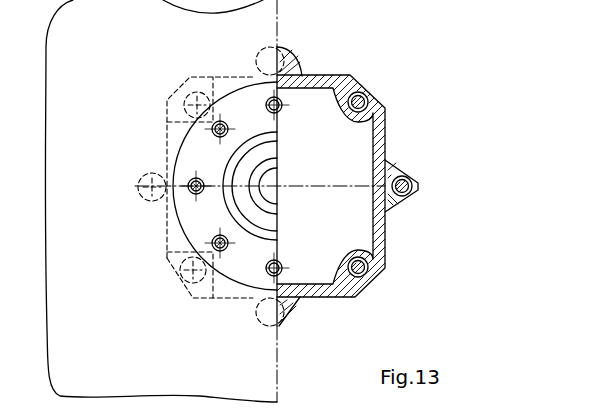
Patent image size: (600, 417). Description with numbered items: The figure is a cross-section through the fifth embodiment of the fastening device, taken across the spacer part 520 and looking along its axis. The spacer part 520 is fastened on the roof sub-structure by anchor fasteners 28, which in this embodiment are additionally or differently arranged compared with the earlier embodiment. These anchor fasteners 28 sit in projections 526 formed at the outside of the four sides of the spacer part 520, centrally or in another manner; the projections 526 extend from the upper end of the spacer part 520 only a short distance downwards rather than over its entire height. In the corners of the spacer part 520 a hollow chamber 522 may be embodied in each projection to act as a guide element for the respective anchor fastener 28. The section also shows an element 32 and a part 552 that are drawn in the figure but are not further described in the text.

The anchor fastener 28 is at (368, 100).
The fastener 32 is at (212, 252).
The spacer part 520 is at (380, 133).
The hollow chamber 522 is at (383, 102).
The projection 526 is at (412, 176).
The flange 552 is at (247, 262).